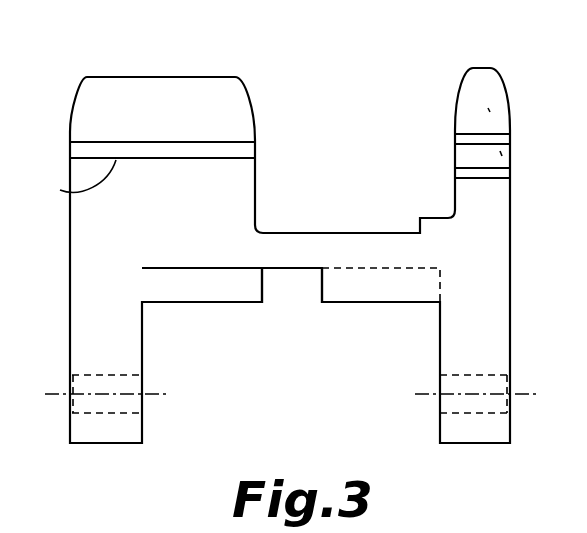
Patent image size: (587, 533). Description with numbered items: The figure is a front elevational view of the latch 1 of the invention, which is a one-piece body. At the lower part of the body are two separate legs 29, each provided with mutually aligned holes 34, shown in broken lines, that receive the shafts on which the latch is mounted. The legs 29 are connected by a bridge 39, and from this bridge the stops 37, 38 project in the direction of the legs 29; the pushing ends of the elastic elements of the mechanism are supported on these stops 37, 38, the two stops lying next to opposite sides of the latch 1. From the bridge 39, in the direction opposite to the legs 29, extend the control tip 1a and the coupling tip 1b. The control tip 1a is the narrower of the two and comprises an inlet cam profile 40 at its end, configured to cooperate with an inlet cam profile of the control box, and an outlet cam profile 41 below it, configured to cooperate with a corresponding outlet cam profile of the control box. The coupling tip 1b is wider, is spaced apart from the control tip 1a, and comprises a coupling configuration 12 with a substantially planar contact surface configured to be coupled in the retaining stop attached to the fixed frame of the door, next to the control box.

The latch 1 is at (337, 124).
The control tip 1a is at (462, 90).
The coupling tip 1b is at (165, 80).
The coupling configuration 12 is at (68, 184).
The legs 29 is at (78, 340).
The holes 34 is at (108, 410).
The stop 37 is at (377, 292).
The stop 38 is at (205, 292).
The bridge 39 is at (293, 243).
The inlet cam profile 40 is at (488, 110).
The outlet cam profile 41 is at (500, 155).